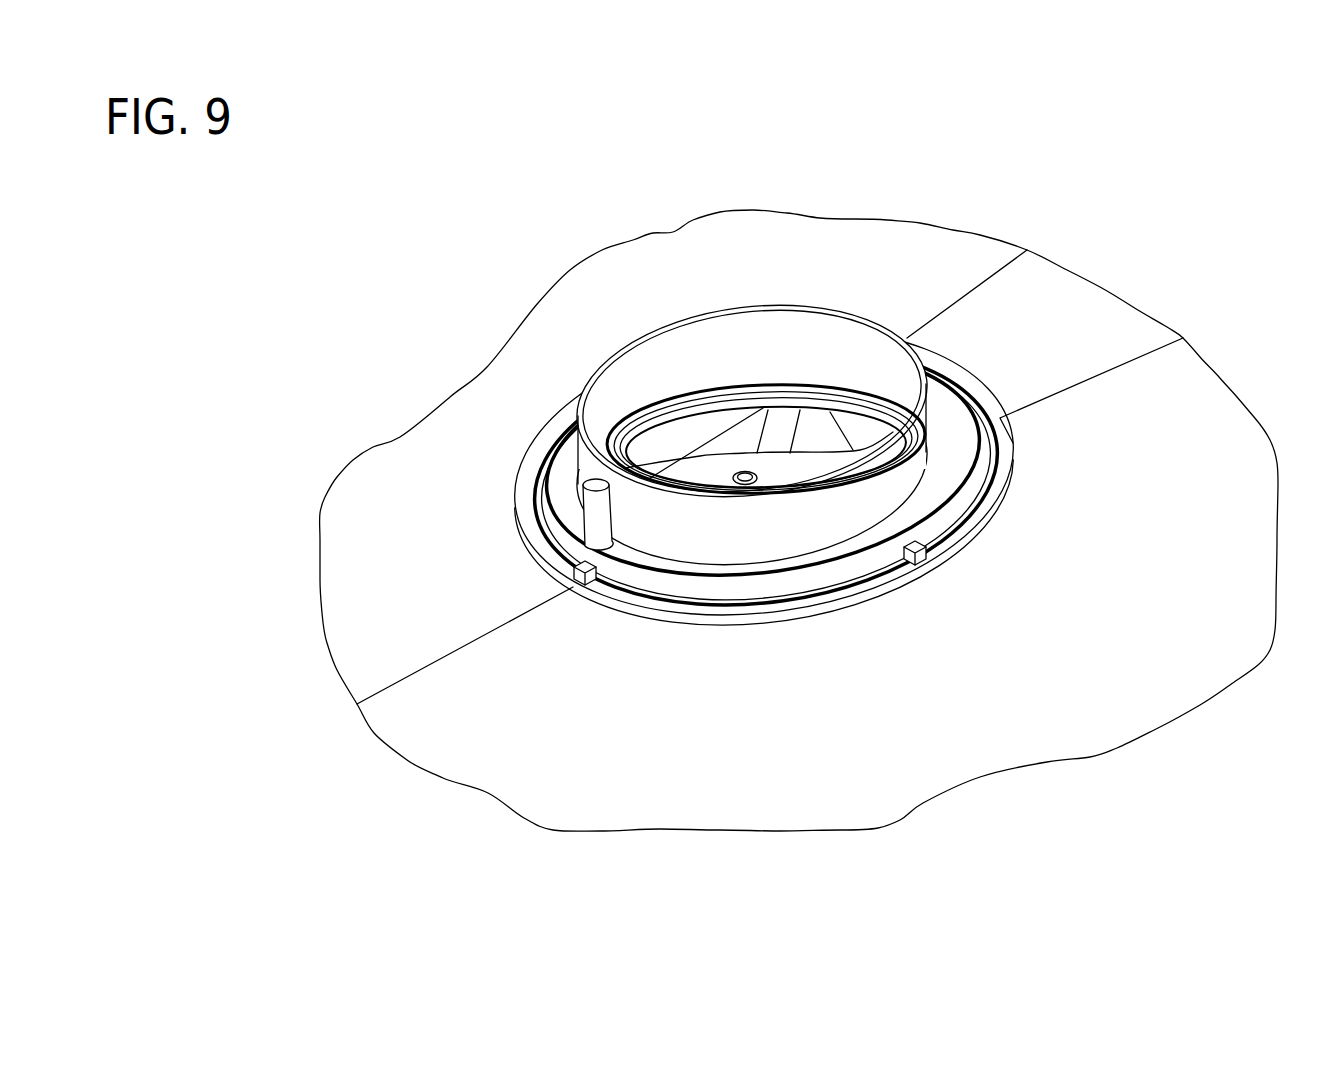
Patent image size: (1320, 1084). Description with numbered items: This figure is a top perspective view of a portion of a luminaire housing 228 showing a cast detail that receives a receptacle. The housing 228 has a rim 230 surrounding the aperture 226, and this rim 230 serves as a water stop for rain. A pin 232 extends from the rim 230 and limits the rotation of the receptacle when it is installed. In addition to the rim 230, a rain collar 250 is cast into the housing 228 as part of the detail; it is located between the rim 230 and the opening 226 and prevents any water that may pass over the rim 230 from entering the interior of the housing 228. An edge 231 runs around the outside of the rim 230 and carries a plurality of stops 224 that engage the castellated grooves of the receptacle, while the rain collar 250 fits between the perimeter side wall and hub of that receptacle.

The stops 224 is at (896, 544).
The aperture 226 is at (757, 373).
The luminaire housing 228 is at (928, 275).
The rim 230 is at (560, 420).
The edge 231 is at (953, 540).
The pin 232 is at (587, 481).
The rain collar 250 is at (617, 347).